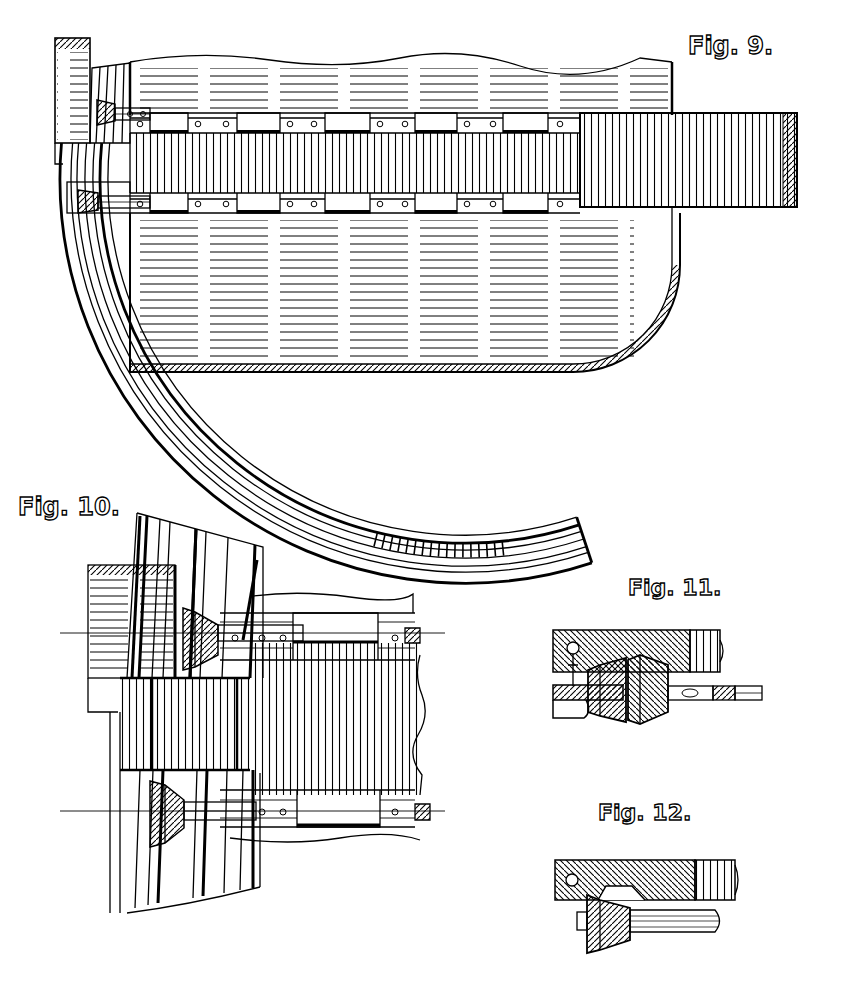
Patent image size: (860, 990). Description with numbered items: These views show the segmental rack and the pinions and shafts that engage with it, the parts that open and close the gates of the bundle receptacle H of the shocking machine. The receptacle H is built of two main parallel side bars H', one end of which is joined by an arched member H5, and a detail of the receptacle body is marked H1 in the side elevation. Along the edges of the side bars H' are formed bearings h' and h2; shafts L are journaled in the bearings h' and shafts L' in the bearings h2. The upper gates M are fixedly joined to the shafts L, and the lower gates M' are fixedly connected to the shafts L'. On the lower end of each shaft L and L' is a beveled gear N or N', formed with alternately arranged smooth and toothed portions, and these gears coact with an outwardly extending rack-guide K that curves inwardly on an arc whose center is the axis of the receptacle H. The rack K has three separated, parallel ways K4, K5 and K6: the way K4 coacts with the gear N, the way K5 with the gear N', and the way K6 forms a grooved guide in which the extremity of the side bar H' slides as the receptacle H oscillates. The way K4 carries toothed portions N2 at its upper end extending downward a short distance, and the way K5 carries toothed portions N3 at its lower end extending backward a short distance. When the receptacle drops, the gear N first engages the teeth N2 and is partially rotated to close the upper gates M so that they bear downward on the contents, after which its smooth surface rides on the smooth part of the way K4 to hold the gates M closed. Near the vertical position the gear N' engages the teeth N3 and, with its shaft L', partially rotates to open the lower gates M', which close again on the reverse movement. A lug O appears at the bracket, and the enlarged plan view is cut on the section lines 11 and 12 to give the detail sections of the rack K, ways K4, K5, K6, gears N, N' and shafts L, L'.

In FIG. 9, the receptacle H is at (688, 160).
In FIG. 10, the side bars H' is at (349, 719).
In FIG. 11, the side bars H' is at (724, 710).
In FIG. 9, the roller body H1 is at (355, 163).
In FIG. 9, the arched member H5 is at (62, 63).
In FIG. 10, the arched member H5 is at (104, 604).
In FIG. 11, the arched member H5 is at (585, 702).
In FIG. 9, the rack-guides K is at (90, 262).
In FIG. 10, the rack-guides K is at (186, 713).
In FIG. 11, the rack-guides K is at (650, 651).
In FIG. 12, the rack-guides K is at (646, 866).
In FIG. 9, the ways K4 is at (516, 530).
In FIG. 10, the ways K4 is at (232, 568).
In FIG. 11, the ways K4 is at (655, 662).
In FIG. 12, the ways K4 is at (640, 890).
In FIG. 9, the ways K5 is at (586, 543).
In FIG. 10, the ways K5 is at (184, 548).
In FIG. 11, the ways K5 is at (608, 662).
In FIG. 12, the ways K5 is at (612, 888).
In FIG. 9, the ways K6 is at (504, 568).
In FIG. 10, the ways K6 is at (146, 540).
In FIG. 11, the ways K6 is at (573, 643).
In FIG. 12, the ways K6 is at (574, 874).
In FIG. 9, the shafts L is at (135, 92).
In FIG. 10, the shafts L is at (319, 606).
In FIG. 11, the shafts L is at (690, 709).
In FIG. 9, the shafts L' is at (128, 221).
In FIG. 10, the shafts L' is at (307, 826).
In FIG. 11, the shafts L' is at (756, 703).
In FIG. 12, the shafts L' is at (675, 936).
In FIG. 9, the upper gates M is at (401, 85).
In FIG. 9, the lower gates M' is at (405, 289).
In FIG. 9, the beveled gears N is at (71, 113).
In FIG. 10, the beveled gears N is at (215, 619).
In FIG. 11, the beveled gears N is at (648, 702).
In FIG. 9, the beveled gears N' is at (80, 212).
In FIG. 10, the beveled gears N' is at (132, 835).
In FIG. 11, the beveled gears N' is at (611, 703).
In FIG. 12, the beveled gears N' is at (616, 933).
In FIG. 9, the toothed portions N2 is at (114, 72).
In FIG. 10, the toothed portions N2 is at (240, 672).
In FIG. 9, the toothed portions N3 is at (446, 543).
In FIG. 9, the lug O is at (57, 150).
In FIG. 10, the lug O is at (96, 700).
In FIG. 11, the lug O is at (558, 718).
In FIG. 9, the bearings h' is at (355, 110).
In FIG. 10, the bearings h' is at (317, 614).
In FIG. 9, the bearings h2 is at (264, 212).
In FIG. 10, the bearings h2 is at (350, 830).
In FIG. 10, the section line 11 is at (252, 633).
In FIG. 10, the section line 12 is at (251, 811).